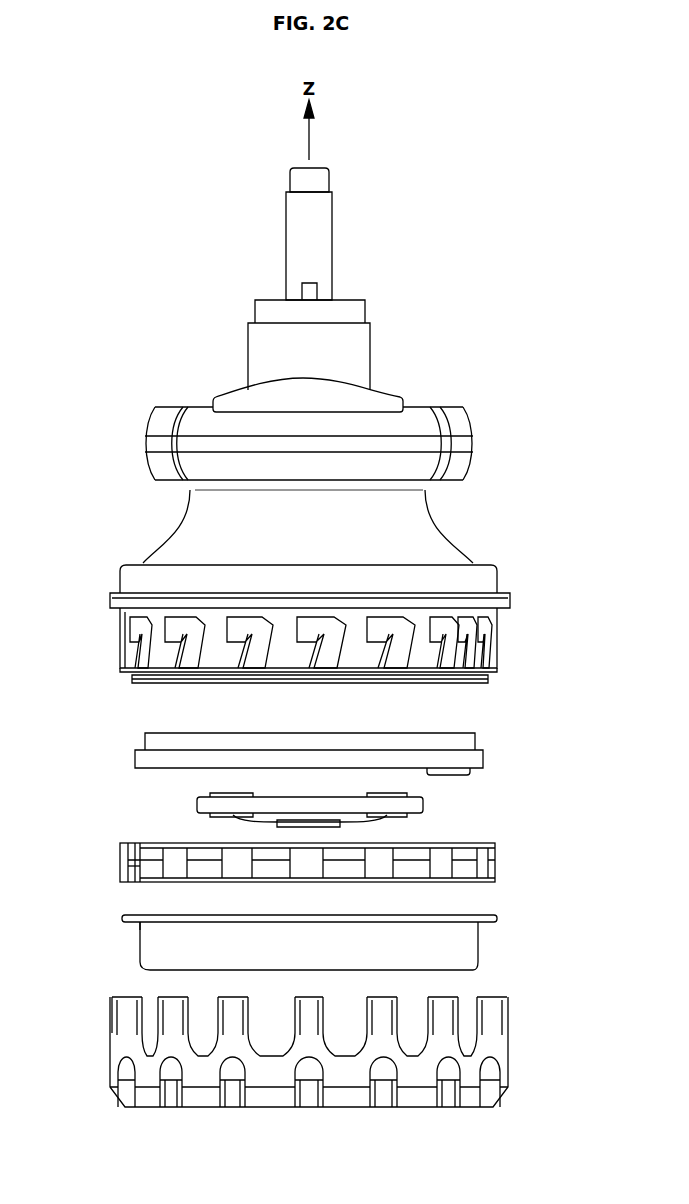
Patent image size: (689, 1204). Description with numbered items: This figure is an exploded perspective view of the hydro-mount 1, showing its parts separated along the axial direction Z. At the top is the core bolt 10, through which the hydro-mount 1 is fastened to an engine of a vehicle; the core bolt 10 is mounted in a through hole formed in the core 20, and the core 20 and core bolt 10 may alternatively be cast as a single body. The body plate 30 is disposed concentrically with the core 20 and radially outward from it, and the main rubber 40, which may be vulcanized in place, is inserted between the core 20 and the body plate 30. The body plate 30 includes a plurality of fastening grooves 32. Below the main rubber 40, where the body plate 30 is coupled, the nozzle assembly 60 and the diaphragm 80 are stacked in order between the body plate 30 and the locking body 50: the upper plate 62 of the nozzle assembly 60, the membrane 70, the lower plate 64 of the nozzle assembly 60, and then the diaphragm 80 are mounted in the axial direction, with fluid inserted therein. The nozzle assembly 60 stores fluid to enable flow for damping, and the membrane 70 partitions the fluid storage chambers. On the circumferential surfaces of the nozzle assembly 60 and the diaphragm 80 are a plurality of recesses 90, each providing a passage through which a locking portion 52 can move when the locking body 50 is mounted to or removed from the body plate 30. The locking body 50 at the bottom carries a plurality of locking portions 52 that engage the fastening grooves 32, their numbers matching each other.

The hydro-mount 1 is at (475, 207).
The core bolt 10 is at (320, 246).
The core 20 is at (355, 312).
The body plate 30 is at (508, 603).
The fastening grooves 32 is at (483, 685).
The main rubber 40 is at (430, 428).
The locking body 50 is at (508, 1077).
The locking portions 52 is at (448, 1018).
The nozzle assembly 60 is at (60, 735).
The upper plate 62 is at (145, 735).
The lower plate 64 is at (150, 850).
The membrane 70 is at (423, 803).
The diaphragm 80 is at (465, 943).
The recesses 90 is at (163, 868).